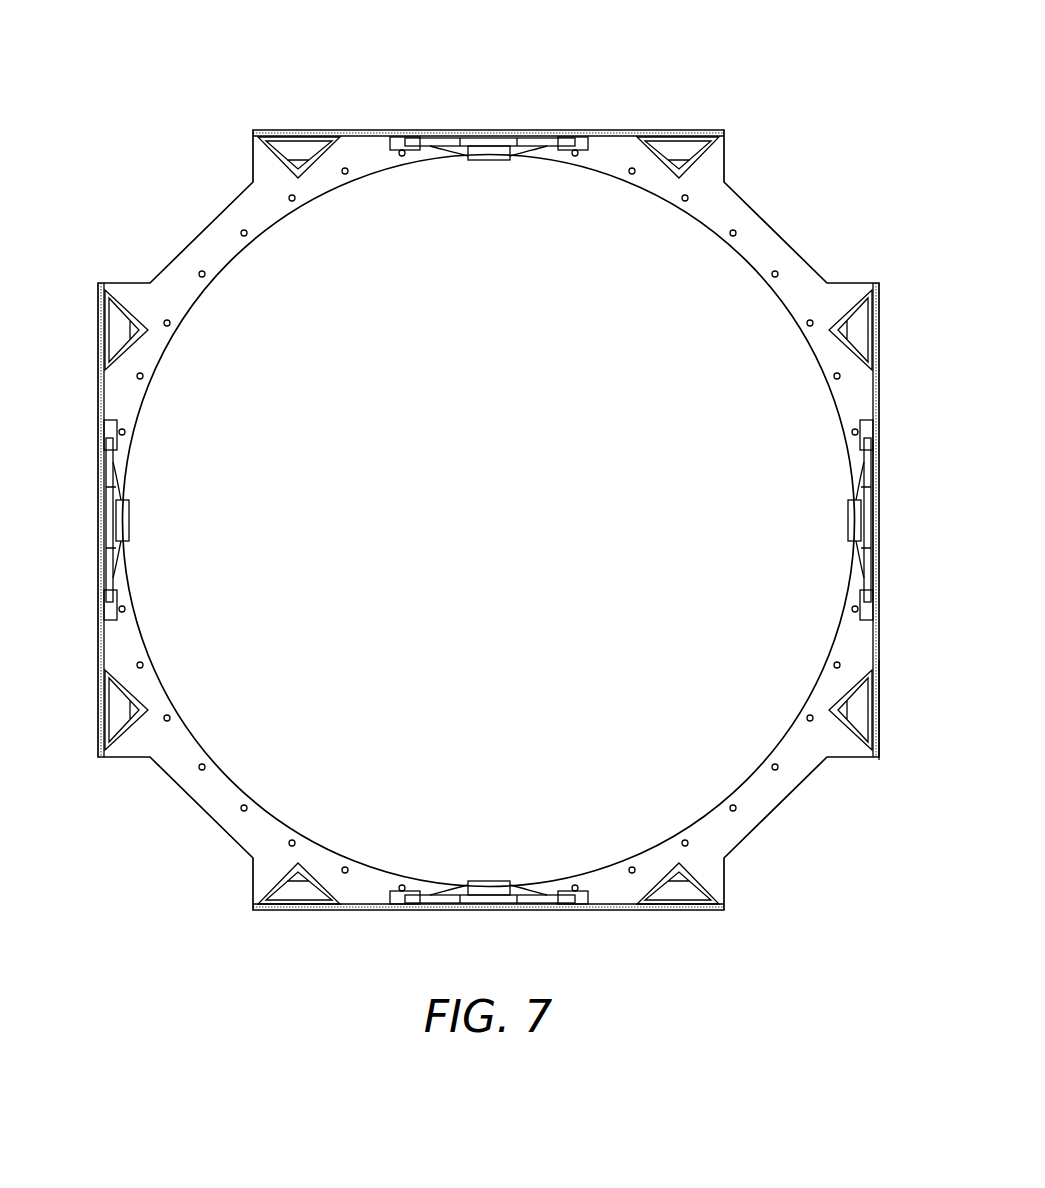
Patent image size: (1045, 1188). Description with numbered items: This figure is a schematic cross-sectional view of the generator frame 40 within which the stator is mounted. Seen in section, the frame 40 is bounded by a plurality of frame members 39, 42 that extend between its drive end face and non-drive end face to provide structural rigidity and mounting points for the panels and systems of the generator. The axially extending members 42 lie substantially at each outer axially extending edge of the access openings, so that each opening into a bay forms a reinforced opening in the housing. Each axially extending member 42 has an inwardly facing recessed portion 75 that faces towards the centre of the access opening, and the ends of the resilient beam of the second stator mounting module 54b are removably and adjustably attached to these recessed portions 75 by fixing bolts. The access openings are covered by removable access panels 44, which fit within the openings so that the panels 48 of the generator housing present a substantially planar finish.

The frame 40 is at (208, 90).
The frame member 39 is at (128, 730).
The axially extending member 42 is at (398, 140).
The second stator mounting module 54b is at (521, 142).
The inwardly facing recessed portion 75 is at (108, 445).
The access panel 44 is at (877, 548).
The panel 48 is at (879, 710).